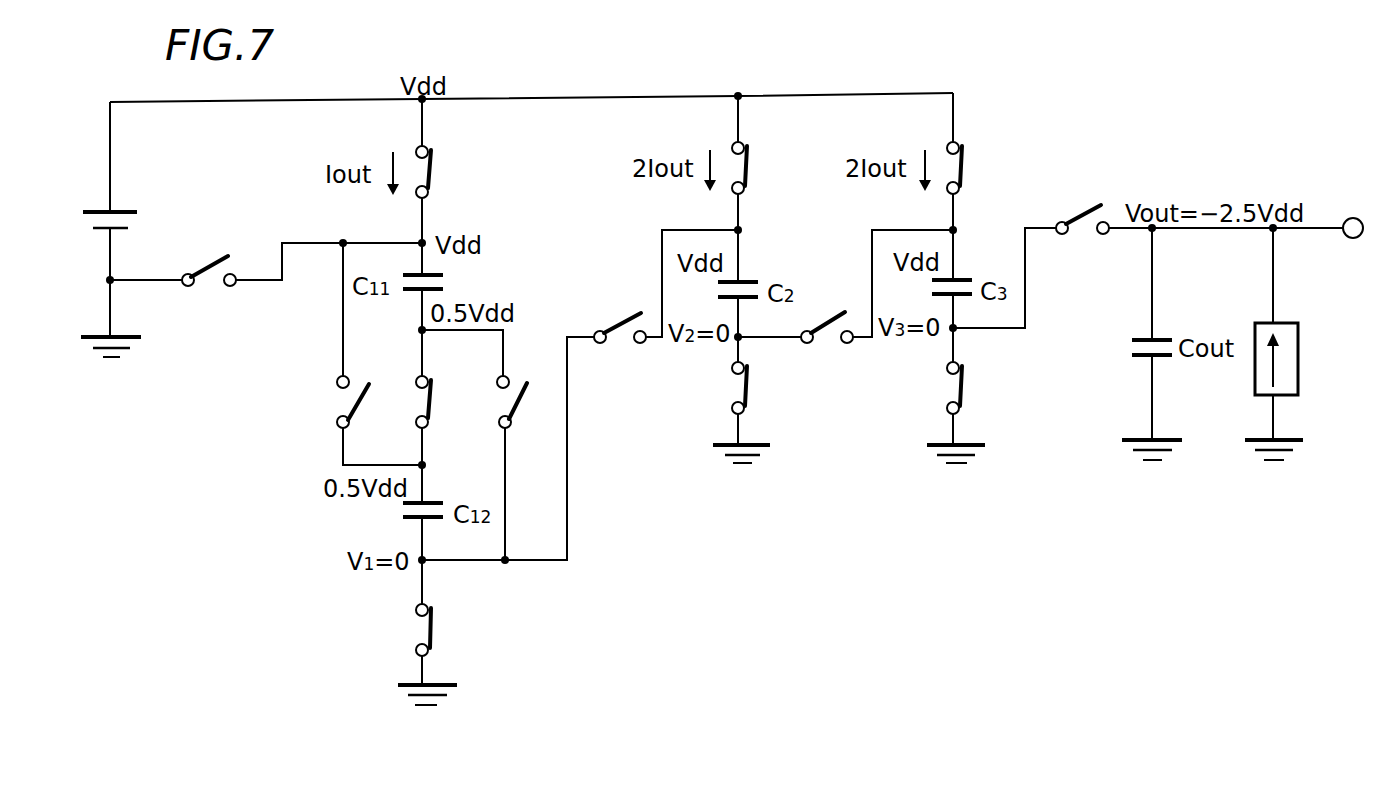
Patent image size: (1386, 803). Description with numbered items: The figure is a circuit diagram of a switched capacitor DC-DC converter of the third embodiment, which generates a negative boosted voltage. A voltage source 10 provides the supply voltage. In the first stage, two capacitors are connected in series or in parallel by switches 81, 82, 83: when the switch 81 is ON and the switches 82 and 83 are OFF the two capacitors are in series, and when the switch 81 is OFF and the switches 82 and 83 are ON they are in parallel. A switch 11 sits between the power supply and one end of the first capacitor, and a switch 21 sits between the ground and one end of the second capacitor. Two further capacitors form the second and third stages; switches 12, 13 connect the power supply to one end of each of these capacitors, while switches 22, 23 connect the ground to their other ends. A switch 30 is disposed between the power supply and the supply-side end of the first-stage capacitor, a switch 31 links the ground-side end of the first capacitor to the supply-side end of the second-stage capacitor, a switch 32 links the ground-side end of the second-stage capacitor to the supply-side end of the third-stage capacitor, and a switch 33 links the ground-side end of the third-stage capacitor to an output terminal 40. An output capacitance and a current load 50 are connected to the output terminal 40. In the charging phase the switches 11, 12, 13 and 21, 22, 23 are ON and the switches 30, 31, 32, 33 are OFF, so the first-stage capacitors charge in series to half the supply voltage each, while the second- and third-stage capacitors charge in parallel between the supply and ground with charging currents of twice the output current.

The voltage source 10 is at (145, 213).
The switch 11 is at (440, 167).
The switch 12 is at (757, 162).
The switch 13 is at (968, 160).
The switch 21 is at (447, 633).
The switch 22 is at (757, 387).
The switch 23 is at (975, 390).
The switch 30 is at (210, 293).
The switch 31 is at (618, 347).
The switch 32 is at (825, 353).
The switch 33 is at (1078, 242).
The output terminal 40 is at (1352, 210).
The current load 50 is at (1305, 392).
The switch 81 is at (435, 410).
The switch 82 is at (365, 425).
The switch 83 is at (515, 423).